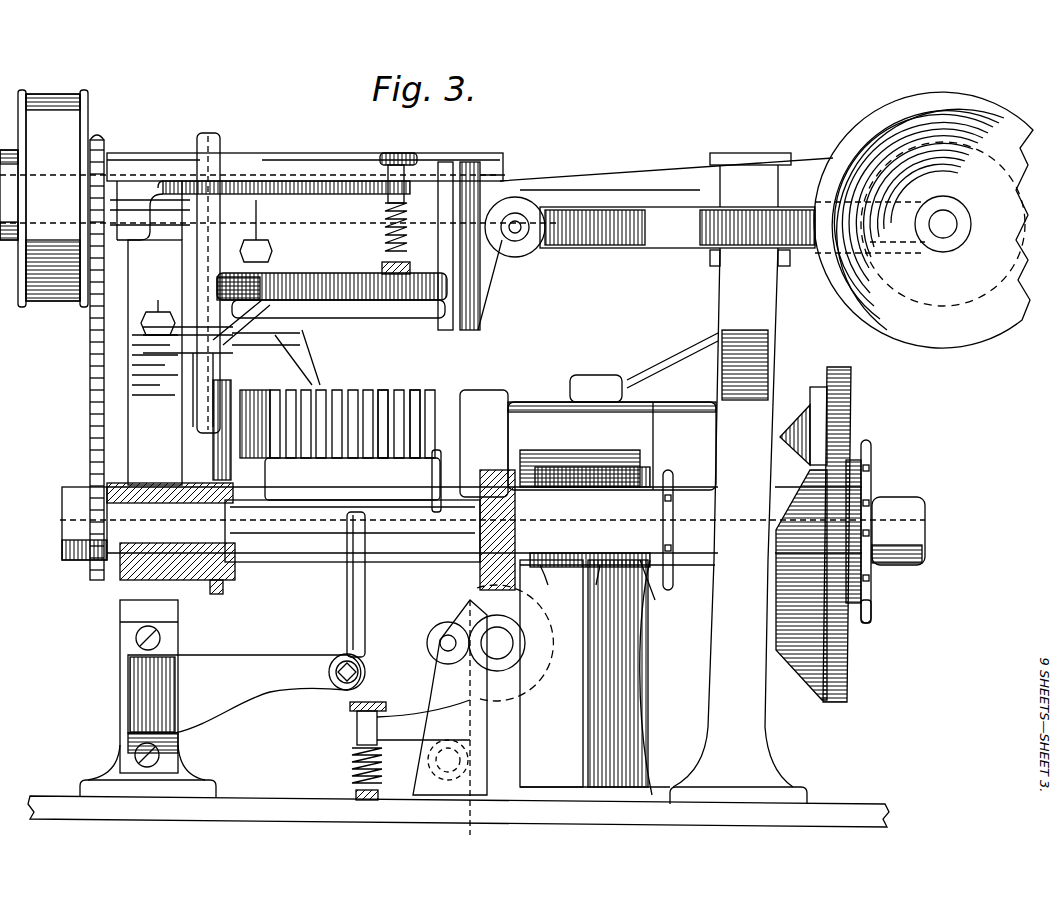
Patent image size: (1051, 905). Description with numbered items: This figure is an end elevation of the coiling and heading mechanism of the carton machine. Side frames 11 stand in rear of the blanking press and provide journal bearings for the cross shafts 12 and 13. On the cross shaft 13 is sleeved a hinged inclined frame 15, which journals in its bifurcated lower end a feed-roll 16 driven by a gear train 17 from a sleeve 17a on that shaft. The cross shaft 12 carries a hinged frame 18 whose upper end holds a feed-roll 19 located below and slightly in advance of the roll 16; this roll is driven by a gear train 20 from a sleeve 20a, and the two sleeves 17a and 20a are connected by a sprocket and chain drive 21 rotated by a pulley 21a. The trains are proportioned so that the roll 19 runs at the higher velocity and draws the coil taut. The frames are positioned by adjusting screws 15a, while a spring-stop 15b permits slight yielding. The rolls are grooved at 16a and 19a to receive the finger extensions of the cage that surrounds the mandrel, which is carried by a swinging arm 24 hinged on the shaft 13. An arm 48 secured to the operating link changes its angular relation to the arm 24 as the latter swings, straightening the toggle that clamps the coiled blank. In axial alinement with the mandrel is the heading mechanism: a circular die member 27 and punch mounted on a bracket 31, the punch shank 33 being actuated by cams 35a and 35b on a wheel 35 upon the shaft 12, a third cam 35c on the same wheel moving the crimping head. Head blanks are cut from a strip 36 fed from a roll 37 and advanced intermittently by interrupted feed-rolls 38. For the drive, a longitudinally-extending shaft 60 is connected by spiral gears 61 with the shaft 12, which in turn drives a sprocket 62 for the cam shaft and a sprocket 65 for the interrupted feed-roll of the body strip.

The side frames 11 is at (126, 605).
The cross shaft 12 is at (733, 478).
The cross shaft 13 is at (553, 185).
The hinged inclined frame 15 is at (440, 330).
The adjusting screws 15a is at (270, 250).
The spring-stop 15b is at (400, 255).
The feed-roll 16 is at (380, 390).
The groove 16a is at (408, 392).
The gear train 17 is at (126, 360).
The sleeve 17a is at (118, 163).
The hinged frame 18 is at (435, 482).
The feed-roll 19 is at (318, 452).
The groove 19a is at (370, 452).
The gear train 20 is at (222, 450).
The sleeve 20a is at (226, 572).
The sprocket and chain drive 21 is at (92, 405).
The pulley 21a is at (88, 112).
The swinging arm 24 is at (280, 343).
The circular die member 27 is at (480, 392).
The bracket 31 is at (630, 590).
The shank 33 is at (782, 395).
The wheel 35 is at (843, 368).
The cam 35a is at (822, 415).
The cam 35b is at (803, 405).
The cam 35c is at (870, 595).
The strip 36 is at (492, 338).
The roll 37 is at (972, 112).
The interrupted feed-rolls 38 is at (432, 628).
The arm 48 is at (322, 352).
The longitudinally-extending shaft 60 is at (527, 638).
The spiral gears 61 is at (470, 603).
The sprocket 62 is at (872, 478).
The sprocket 65 is at (670, 565).